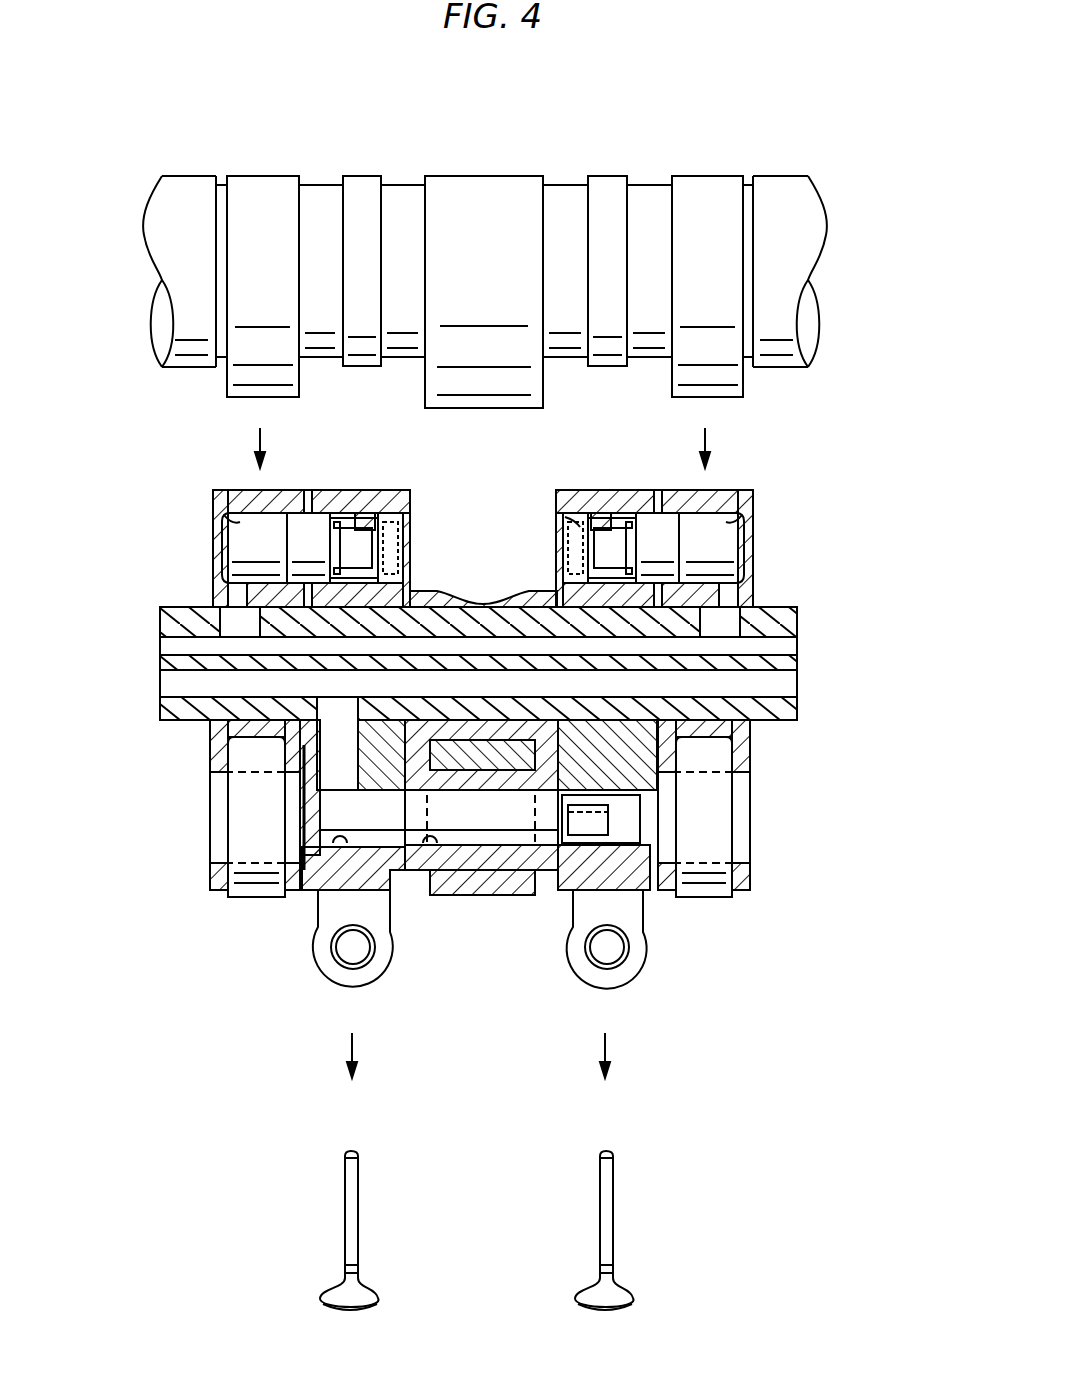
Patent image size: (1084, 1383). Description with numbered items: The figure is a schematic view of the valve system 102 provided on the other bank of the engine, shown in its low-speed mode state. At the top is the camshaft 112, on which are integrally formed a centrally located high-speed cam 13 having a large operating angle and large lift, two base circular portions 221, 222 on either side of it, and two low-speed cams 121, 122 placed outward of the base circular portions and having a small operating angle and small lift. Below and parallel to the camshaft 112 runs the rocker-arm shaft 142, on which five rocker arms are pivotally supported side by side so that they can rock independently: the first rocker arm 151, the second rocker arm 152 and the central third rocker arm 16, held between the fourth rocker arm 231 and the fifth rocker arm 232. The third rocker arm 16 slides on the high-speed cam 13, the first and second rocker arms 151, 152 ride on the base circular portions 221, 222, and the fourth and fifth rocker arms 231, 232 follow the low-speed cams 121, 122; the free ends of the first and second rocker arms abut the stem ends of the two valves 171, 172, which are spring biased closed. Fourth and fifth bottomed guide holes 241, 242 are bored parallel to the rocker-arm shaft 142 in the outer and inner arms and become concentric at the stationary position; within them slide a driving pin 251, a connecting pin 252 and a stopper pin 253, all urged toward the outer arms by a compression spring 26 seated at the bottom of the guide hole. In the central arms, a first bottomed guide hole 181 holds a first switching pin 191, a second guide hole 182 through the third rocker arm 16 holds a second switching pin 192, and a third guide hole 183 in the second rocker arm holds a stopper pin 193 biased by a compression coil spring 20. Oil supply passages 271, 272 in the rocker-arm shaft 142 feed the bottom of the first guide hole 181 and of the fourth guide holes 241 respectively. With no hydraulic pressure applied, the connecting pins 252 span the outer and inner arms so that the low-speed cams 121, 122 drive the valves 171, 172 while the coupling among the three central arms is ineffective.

The valve system 102 is at (811, 408).
The camshaft 112 is at (786, 178).
The low-speed cam 121 is at (268, 178).
The low-speed cam 122 is at (704, 178).
The high-speed cam 13 is at (481, 178).
The rocker-arm shaft 142 is at (797, 722).
The first rocker arm 151 is at (396, 490).
The second rocker arm 152 is at (571, 490).
The third rocker arm 16 is at (475, 890).
The valve 171 is at (348, 1208).
The valve 172 is at (608, 1205).
The first bottomed guide hole 181 is at (330, 847).
The second guide hole 182 is at (440, 880).
The third guide hole 183 is at (645, 815).
The first switching pin 191 is at (330, 812).
The second switching pin 192 is at (505, 880).
The stopper pin 193 is at (575, 880).
The compression coil spring 20 is at (645, 815).
The base circular portion 221 is at (366, 178).
The base circular portion 222 is at (604, 178).
The fourth rocker arm 231 is at (236, 490).
The fifth rocker arm 232 is at (734, 490).
The fourth bottomed guide hole 241 is at (230, 520).
The fifth bottomed guide hole 242 is at (565, 517).
The driving pin 251 is at (237, 557).
The connecting pin 252 is at (295, 518).
The stopper pin 253 is at (363, 515).
The compression spring 26 is at (557, 548).
The oil supply passage 271 is at (790, 680).
The oil supply passage 272 is at (797, 637).